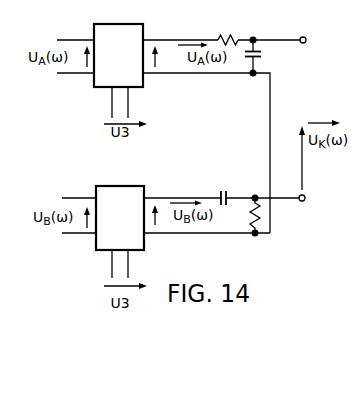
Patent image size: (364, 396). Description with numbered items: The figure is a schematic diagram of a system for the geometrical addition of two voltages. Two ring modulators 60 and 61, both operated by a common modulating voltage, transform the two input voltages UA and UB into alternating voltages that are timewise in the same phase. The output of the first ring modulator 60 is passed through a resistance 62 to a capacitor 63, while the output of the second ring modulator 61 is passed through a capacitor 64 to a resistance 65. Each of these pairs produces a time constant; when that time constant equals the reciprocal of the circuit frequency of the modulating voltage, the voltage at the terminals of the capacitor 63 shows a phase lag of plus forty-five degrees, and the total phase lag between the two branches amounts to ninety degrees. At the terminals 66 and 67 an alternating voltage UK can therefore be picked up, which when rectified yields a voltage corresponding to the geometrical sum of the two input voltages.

The ring modulator 60 is at (118, 55).
The ring modulator 61 is at (120, 218).
The resistance 62 is at (224, 36).
The capacitor 63 is at (261, 54).
The capacitor 64 is at (230, 185).
The resistance 65 is at (259, 216).
The terminal 66 is at (313, 198).
The terminal 67 is at (314, 30).